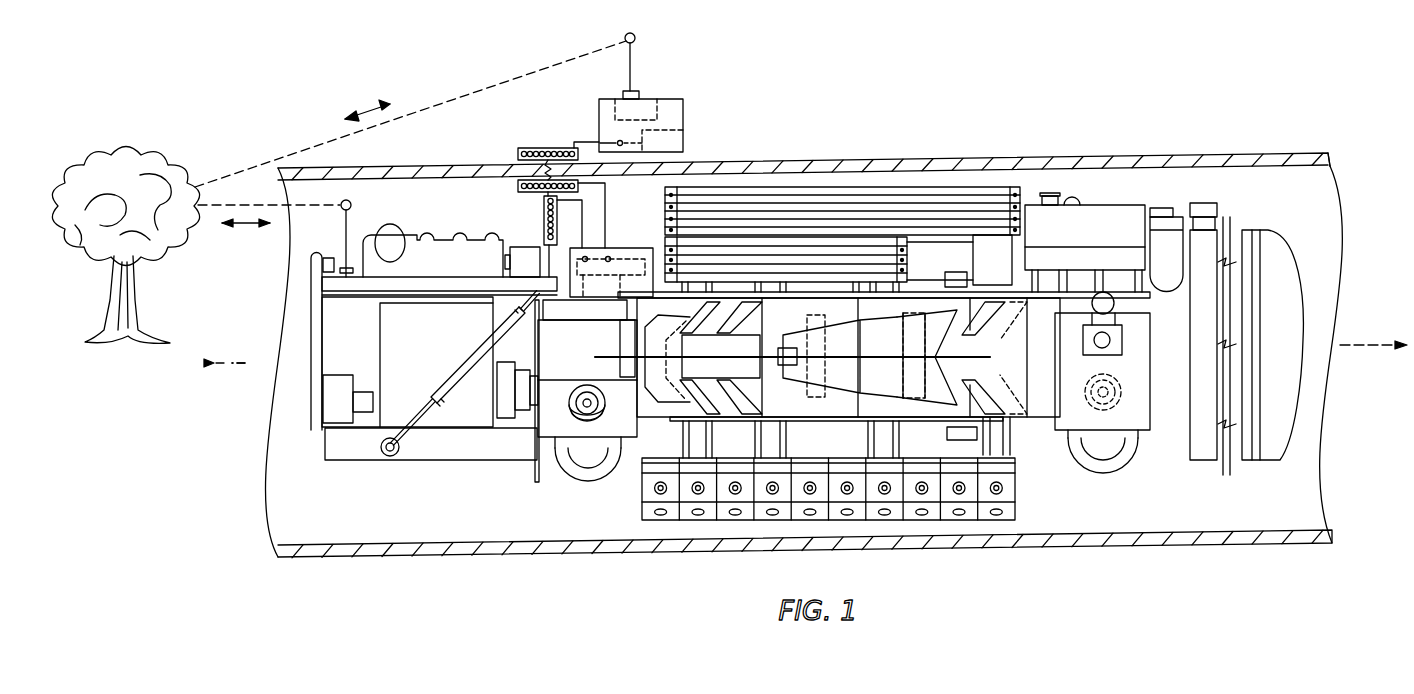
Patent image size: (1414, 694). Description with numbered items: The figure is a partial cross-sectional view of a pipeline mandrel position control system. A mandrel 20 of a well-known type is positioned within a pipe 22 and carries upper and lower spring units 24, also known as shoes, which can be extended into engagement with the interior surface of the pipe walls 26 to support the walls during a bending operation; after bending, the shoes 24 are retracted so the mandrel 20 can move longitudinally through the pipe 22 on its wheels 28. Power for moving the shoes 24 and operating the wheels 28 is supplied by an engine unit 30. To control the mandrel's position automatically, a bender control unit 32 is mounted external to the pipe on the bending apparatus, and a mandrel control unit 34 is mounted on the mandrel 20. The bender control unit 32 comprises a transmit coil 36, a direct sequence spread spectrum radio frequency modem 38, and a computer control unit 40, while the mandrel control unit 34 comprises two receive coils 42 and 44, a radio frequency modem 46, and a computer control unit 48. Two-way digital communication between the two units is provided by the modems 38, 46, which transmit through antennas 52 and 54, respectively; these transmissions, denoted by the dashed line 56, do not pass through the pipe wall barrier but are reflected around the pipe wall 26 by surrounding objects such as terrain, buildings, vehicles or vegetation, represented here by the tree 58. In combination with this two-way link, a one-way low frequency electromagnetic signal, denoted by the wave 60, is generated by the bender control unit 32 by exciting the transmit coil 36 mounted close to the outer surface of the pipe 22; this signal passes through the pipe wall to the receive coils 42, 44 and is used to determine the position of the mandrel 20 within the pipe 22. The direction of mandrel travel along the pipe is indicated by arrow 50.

The mandrel 20 is at (1101, 196).
The pipe 22 is at (927, 158).
The spring units 24 is at (817, 200).
The pipe walls 26 is at (1248, 168).
The wheels 28 is at (578, 482).
The engine unit 30 is at (429, 341).
The bender control unit 32 is at (671, 96).
The mandrel control unit 34 is at (627, 247).
The transmit coil 36 is at (538, 148).
The radio frequency modem 38 is at (648, 98).
The computer control unit 40 is at (685, 139).
The receive coil 42 is at (518, 188).
The receive coil 44 is at (542, 213).
The radio frequency modem 46 is at (583, 299).
The computer control unit 48 is at (620, 299).
The direction of travel 50 is at (240, 368).
The antenna 52 is at (627, 70).
The antenna 54 is at (353, 215).
The dashed line 56 is at (464, 93).
The tree 58 is at (118, 153).
The wave 60 is at (543, 173).